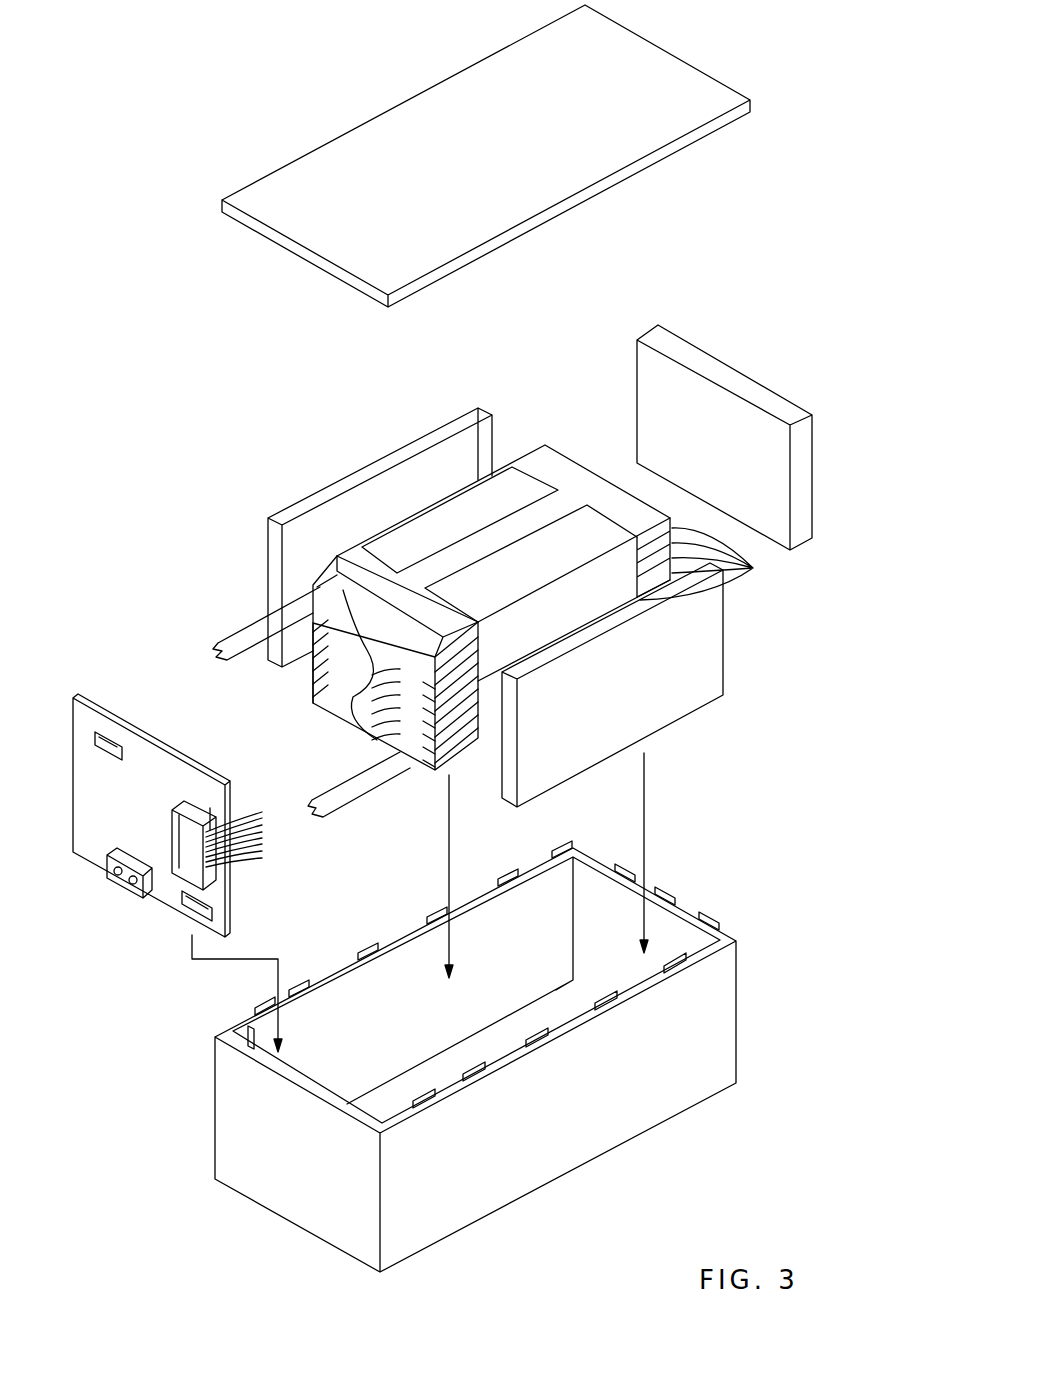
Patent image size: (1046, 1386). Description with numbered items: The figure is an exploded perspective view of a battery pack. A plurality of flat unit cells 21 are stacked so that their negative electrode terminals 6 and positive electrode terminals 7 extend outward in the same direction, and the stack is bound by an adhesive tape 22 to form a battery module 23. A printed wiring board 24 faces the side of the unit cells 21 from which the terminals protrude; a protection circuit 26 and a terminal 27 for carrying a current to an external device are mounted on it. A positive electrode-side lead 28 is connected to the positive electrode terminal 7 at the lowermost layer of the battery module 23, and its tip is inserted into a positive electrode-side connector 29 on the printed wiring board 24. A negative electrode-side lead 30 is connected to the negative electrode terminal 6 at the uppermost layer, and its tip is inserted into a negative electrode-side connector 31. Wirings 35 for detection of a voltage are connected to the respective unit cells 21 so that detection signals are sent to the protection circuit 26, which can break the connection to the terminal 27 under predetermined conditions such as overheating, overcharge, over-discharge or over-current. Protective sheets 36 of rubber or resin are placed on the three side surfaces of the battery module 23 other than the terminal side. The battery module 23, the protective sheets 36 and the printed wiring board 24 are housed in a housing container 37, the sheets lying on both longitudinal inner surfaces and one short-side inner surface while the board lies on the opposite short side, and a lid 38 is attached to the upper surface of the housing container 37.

The lid 38 is at (687, 85).
The battery module 23 is at (428, 500).
The adhesive tape 22 is at (572, 537).
The positive electrode terminal 7 is at (406, 762).
The negative electrode terminal 6 is at (317, 587).
The negative electrode-side lead 30 is at (230, 636).
The positive electrode-side lead 28 is at (348, 812).
The wirings for detection of a voltage 35 is at (340, 697).
The printed wiring board 24 is at (107, 695).
The negative electrode-side connector 31 is at (115, 747).
The protection circuit 26 is at (187, 807).
The terminal for carrying a current to an external device 27 is at (132, 891).
The positive electrode-side connector 29 is at (212, 914).
The protective sheets 36 is at (738, 645).
The unit cells 21 is at (714, 564).
The housing container 37 is at (722, 1020).